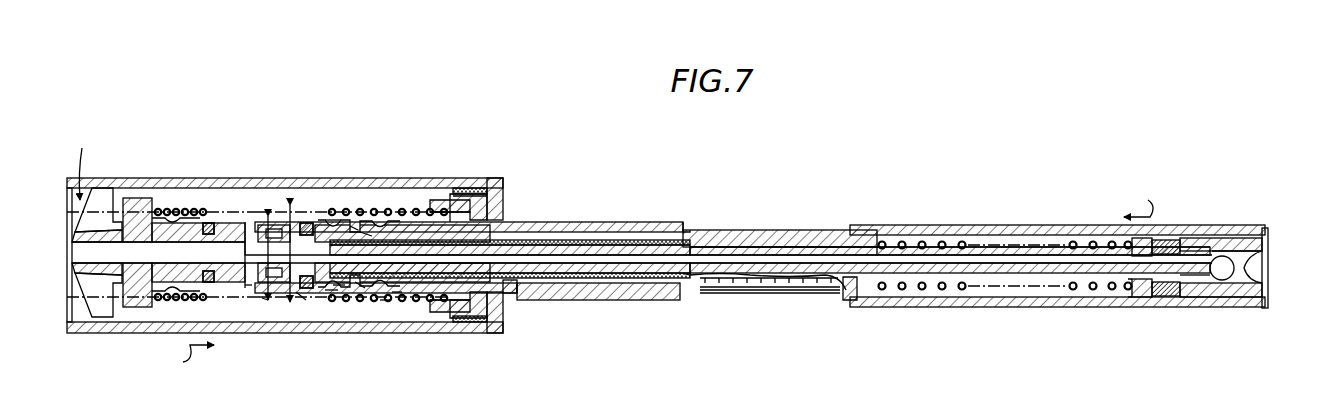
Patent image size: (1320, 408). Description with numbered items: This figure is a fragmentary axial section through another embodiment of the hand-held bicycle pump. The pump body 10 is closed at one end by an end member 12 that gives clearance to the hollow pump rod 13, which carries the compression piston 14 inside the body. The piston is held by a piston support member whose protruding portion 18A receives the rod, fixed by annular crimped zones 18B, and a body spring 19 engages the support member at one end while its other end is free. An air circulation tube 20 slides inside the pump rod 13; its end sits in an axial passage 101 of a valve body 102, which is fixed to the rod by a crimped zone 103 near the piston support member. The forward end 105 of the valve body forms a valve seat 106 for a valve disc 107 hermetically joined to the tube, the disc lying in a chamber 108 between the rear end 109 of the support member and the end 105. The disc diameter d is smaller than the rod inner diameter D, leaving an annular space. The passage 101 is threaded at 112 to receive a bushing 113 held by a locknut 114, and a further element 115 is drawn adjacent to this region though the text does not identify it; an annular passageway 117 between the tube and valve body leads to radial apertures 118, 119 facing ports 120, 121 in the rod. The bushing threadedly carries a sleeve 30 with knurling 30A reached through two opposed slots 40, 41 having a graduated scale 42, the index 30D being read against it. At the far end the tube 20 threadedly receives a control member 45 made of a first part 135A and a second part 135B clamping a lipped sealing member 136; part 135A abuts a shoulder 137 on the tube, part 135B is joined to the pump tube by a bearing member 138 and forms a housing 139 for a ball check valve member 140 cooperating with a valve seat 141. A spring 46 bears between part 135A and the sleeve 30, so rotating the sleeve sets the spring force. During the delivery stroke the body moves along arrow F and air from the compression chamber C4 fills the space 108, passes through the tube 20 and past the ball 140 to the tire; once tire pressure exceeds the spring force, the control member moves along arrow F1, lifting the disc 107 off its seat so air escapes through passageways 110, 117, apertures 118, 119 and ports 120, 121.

The pump body 10 is at (233, 176).
The end member 12 is at (500, 178).
The pump rod 13 is at (629, 220).
The compression piston 14 is at (103, 192).
The protruding portion 18A is at (140, 199).
The annular crimped zones 18B is at (184, 215).
The body spring 19 is at (418, 208).
The air circulation tube 20 is at (576, 285).
The sleeve 30 is at (742, 231).
The external knurling 30A is at (783, 231).
The index 30D is at (703, 292).
The viewing slot 40 is at (850, 228).
The viewing slot 41 is at (845, 301).
The graduated scale 42 is at (749, 283).
The control member 45 is at (1209, 238).
The spring 46 is at (921, 241).
The axial passage 101 is at (361, 286).
The valve body 102 is at (399, 292).
The crimped zone 103 is at (386, 303).
The forward end 105 is at (311, 290).
The valve seat 106 is at (301, 300).
The valve disc 107 is at (272, 284).
The chamber 108 is at (250, 286).
The rear end 109 is at (243, 259).
The annular passageway 110 is at (262, 302).
The threaded portion 112 is at (441, 301).
The bushing 113 is at (509, 281).
The locknut 114 is at (494, 225).
The member 115 is at (481, 211).
The annular axial passageway 117 is at (373, 236).
The radial aperture 118 is at (352, 230).
The radial aperture 119 is at (339, 286).
The port 120 is at (332, 221).
The port 121 is at (333, 289).
The first part 135A is at (1140, 238).
The second part 135B is at (1210, 297).
The lipped sealing member 136 is at (1168, 297).
The shoulder 137 is at (1130, 282).
The bearing member 138 is at (1195, 238).
The housing 139 is at (1238, 259).
The ball check valve member 140 is at (1245, 258).
The valve seat 141 is at (1185, 297).
The valve disc diameter d is at (268, 214).
The inner diameter of rod D is at (290, 203).
The arrow F is at (192, 360).
The arrow F1 is at (1138, 198).
The compression chamber C4 is at (79, 163).